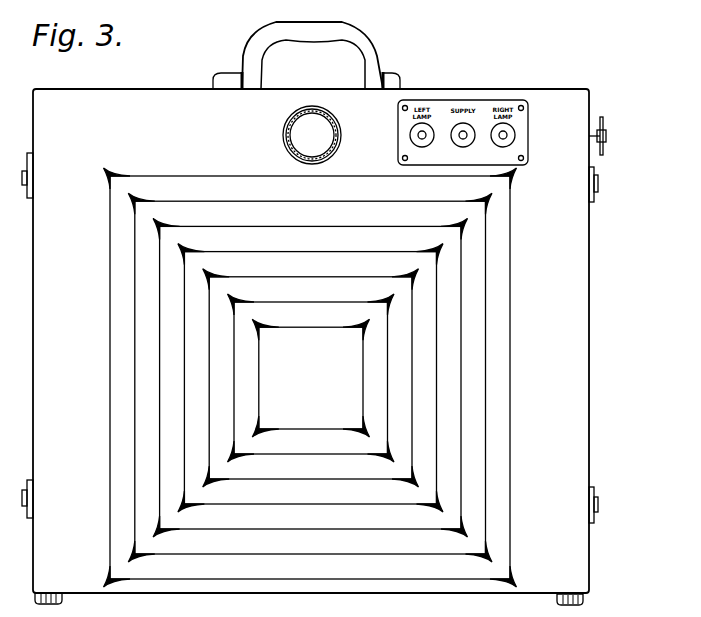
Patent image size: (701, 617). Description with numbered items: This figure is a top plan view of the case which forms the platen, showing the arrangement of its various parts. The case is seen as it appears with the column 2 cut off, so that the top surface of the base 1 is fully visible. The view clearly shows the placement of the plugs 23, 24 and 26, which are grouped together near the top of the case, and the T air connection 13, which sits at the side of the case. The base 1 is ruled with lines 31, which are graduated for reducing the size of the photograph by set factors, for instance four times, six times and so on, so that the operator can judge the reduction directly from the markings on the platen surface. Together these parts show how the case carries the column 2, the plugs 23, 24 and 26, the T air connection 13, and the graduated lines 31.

The base 1 is at (600, 290).
The column 2 is at (341, 127).
The T air connection 13 is at (607, 139).
The plug 23 is at (516, 135).
The plug 24 is at (431, 126).
The plug 26 is at (471, 127).
The lines 31 is at (483, 406).